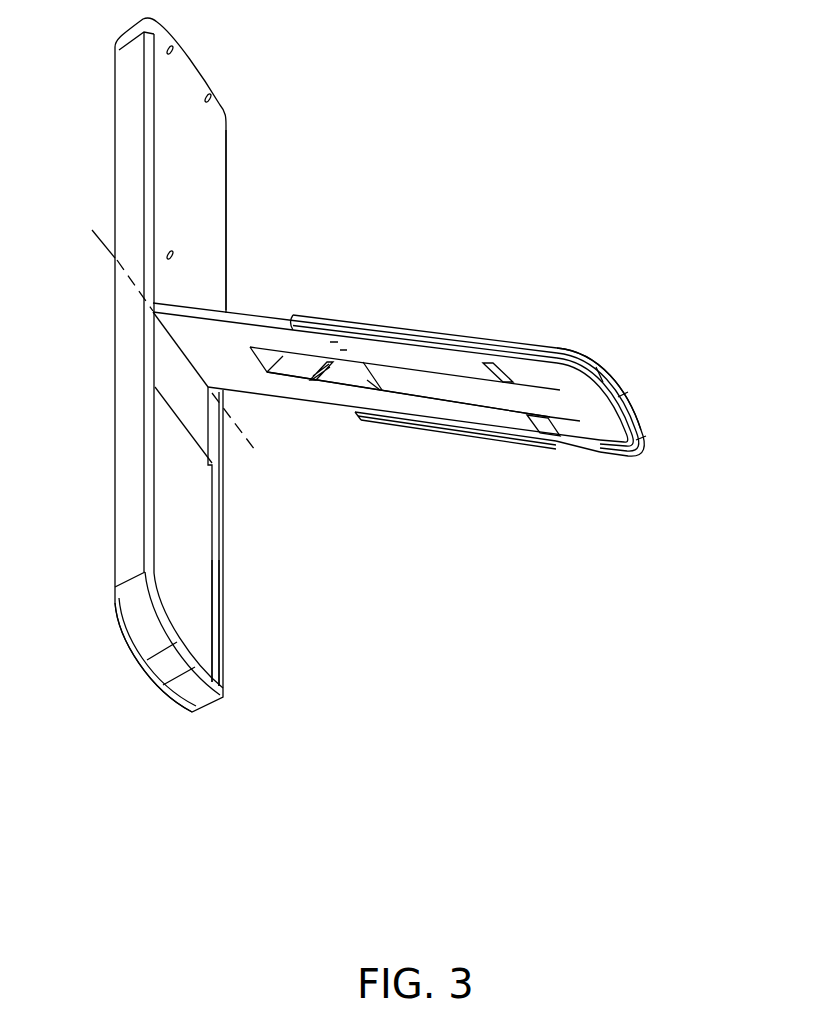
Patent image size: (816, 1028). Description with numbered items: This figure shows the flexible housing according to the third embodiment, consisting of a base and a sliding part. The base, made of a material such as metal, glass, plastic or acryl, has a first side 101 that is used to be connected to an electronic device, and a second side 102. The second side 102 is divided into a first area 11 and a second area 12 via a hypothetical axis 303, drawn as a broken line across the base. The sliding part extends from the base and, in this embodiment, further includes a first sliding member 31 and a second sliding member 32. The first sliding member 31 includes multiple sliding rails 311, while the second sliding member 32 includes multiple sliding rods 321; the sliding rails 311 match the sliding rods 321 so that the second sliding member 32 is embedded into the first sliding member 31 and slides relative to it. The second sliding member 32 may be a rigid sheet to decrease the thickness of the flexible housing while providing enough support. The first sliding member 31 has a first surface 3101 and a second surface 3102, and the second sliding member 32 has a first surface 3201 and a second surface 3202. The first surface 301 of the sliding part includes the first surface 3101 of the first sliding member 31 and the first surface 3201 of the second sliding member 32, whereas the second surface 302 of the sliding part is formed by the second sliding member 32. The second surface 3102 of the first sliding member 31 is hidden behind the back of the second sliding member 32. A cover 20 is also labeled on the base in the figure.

The first area 11 is at (88, 28).
The second area 12 is at (88, 313).
The cover 20 is at (210, 225).
The first side 101 is at (132, 647).
The second side 102 is at (200, 628).
The hypothetical axis 303 is at (115, 257).
The second surface of the first sliding member 3102 is at (272, 318).
The second sliding member 32 is at (535, 279).
The sliding rod 321 is at (372, 332).
The second surface of the second sliding member 3202 is at (600, 377).
The second surface of the sliding part 302 is at (664, 389).
The first surface of the first sliding member 3101 is at (290, 385).
The first surface of the sliding part 301 is at (484, 439).
The first surface of the second sliding member 3201 is at (597, 413).
The first sliding member 31 is at (520, 485).
The sliding rail 311 is at (415, 405).